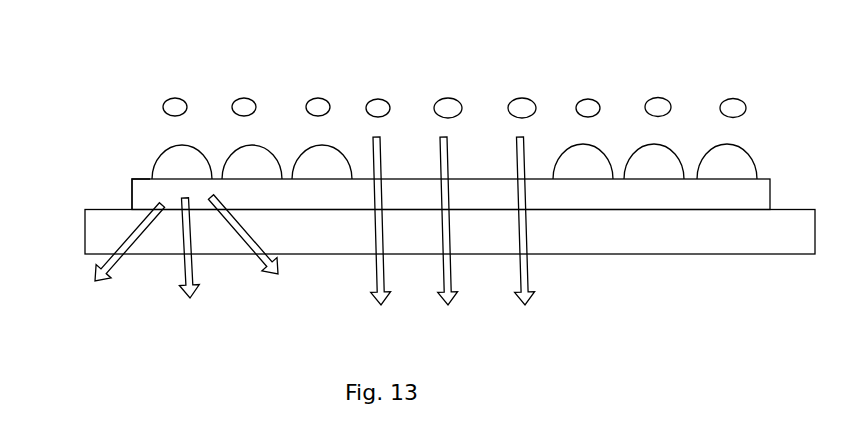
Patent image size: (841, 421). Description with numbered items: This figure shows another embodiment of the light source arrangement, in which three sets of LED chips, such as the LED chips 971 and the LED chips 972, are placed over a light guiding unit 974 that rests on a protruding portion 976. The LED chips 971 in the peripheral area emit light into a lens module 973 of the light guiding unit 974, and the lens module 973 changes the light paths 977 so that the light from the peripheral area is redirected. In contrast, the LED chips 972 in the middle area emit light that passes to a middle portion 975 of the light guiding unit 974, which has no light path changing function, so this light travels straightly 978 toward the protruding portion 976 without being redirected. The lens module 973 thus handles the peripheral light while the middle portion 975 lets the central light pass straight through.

The LED chips 971 is at (177, 107).
The LED chips 972 is at (450, 100).
The lens module 973 is at (173, 170).
The light guiding unit 974 is at (143, 190).
The middle portion 975 is at (468, 187).
The protruding portion 976 is at (306, 247).
The light paths 977 is at (187, 283).
The straight light path 978 is at (453, 297).